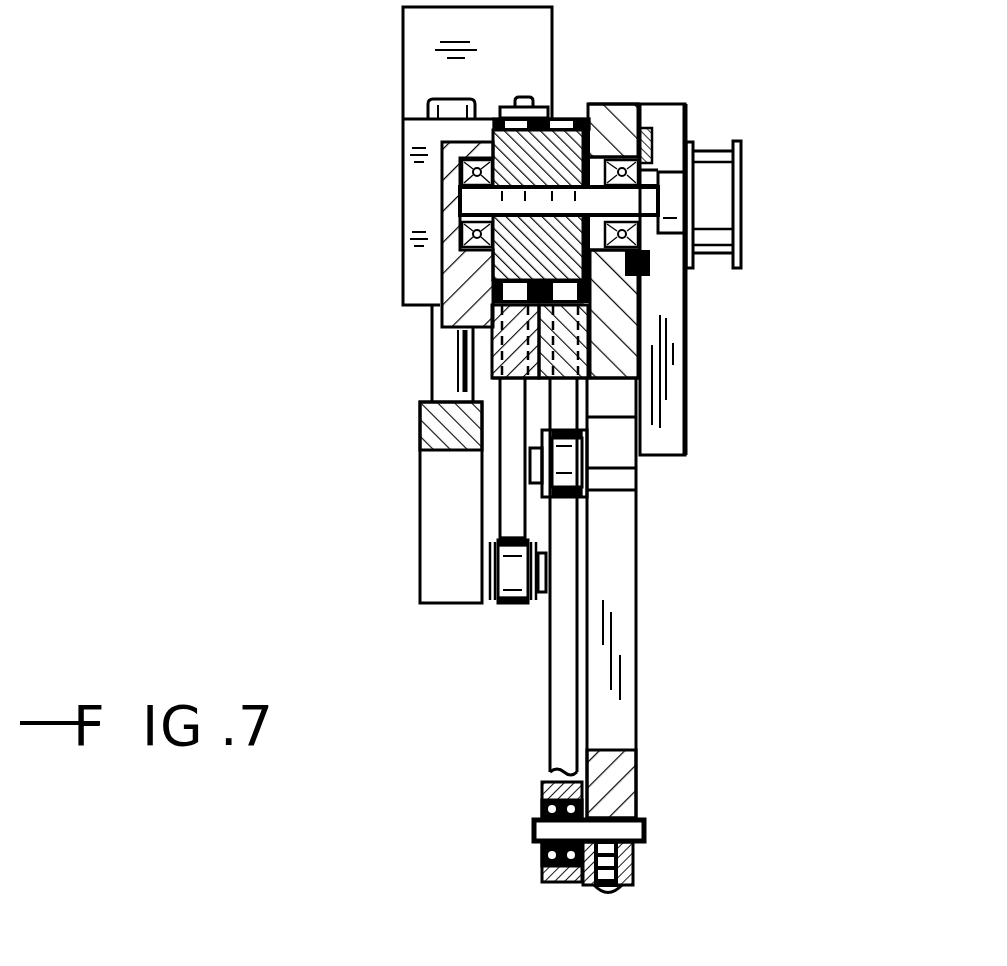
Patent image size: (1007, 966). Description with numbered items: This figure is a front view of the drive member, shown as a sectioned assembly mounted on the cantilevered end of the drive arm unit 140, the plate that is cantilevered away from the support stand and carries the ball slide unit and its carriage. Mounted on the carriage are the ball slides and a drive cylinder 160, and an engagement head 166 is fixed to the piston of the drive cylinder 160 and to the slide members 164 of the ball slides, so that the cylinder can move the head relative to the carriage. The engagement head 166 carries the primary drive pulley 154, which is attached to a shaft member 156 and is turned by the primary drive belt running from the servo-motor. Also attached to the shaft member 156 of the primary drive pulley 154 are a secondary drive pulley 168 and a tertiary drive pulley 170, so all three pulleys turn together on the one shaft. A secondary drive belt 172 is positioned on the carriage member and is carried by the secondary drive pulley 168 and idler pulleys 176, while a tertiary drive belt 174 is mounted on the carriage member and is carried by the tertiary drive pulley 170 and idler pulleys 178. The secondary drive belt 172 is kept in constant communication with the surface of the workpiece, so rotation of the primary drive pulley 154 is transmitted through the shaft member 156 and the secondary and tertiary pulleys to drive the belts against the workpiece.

The drive arm unit 140 is at (688, 376).
The primary drive pulley 154 is at (742, 175).
The shaft member 156 is at (647, 230).
The drive cylinder 160 is at (428, 50).
The slide members 164 is at (443, 357).
The engagement head 166 is at (447, 537).
The secondary drive pulley 168 is at (560, 118).
The tertiary drive pulley 170 is at (500, 108).
The secondary drive belt 172 is at (560, 727).
The tertiary drive belt 174 is at (512, 478).
The idler pulleys 176 is at (588, 466).
The idler pulleys 178 is at (490, 600).